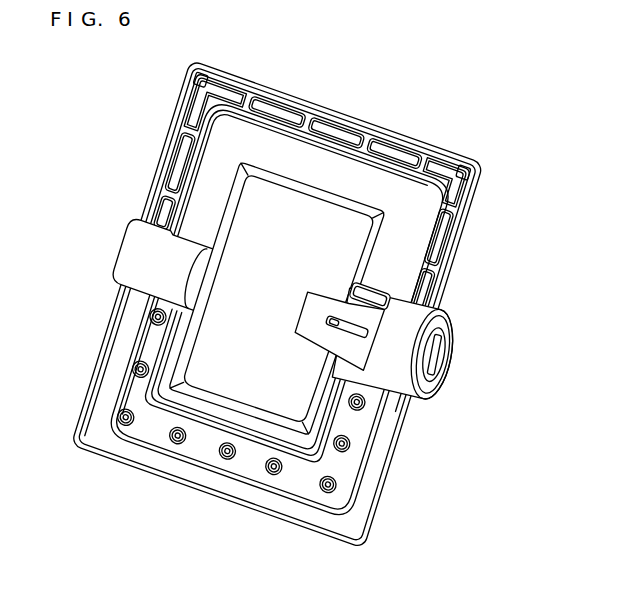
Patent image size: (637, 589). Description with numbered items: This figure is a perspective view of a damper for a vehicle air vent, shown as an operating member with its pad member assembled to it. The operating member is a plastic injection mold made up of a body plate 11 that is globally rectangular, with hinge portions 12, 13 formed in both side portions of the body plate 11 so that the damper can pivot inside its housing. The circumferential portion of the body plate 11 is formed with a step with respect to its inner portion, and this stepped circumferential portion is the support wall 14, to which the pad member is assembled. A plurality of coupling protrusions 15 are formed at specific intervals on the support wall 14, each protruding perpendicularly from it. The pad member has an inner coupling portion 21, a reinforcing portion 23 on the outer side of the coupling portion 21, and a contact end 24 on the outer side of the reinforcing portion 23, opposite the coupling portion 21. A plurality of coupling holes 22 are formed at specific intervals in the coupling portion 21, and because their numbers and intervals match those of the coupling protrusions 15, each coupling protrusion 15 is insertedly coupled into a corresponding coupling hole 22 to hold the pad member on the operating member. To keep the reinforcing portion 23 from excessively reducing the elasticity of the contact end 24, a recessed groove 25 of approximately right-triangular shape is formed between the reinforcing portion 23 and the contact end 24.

The body plate 11 is at (262, 228).
The hinge portion 12 is at (142, 250).
The hinge portion 13 is at (413, 398).
The support wall 14 is at (265, 143).
The coupling protrusion 15 is at (220, 454).
The coupling portion 21 is at (303, 480).
The coupling hole 22 is at (240, 451).
The reinforcing portion 23 is at (330, 118).
The contact end 24 is at (413, 137).
The recessed groove 25 is at (380, 135).